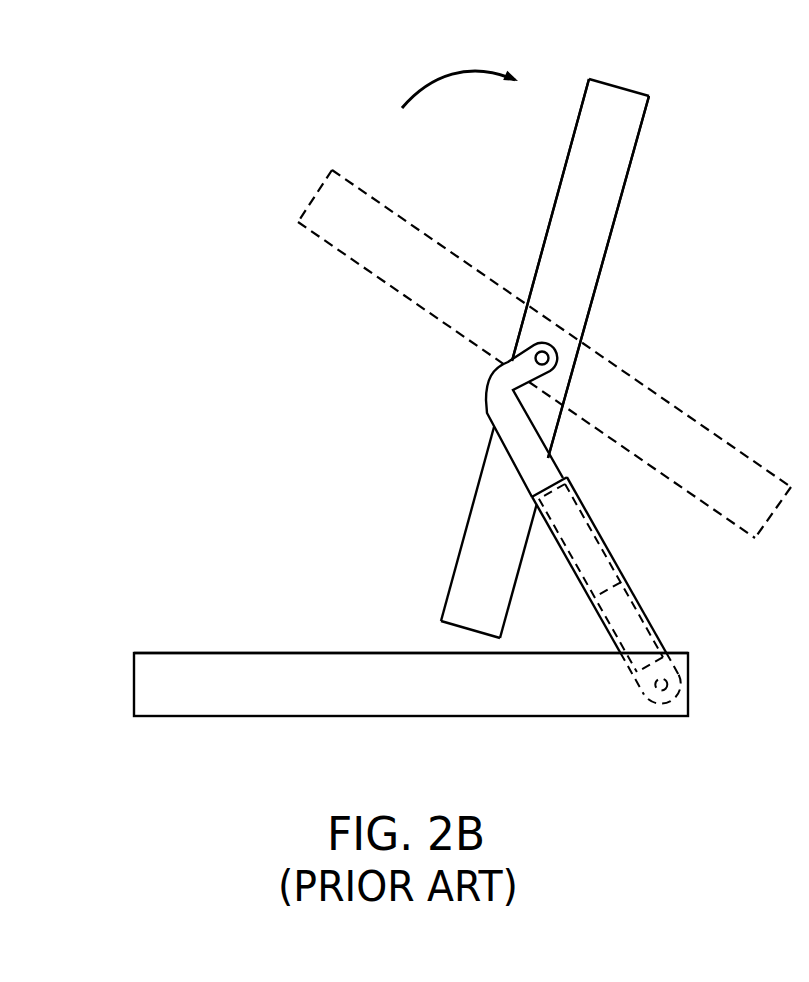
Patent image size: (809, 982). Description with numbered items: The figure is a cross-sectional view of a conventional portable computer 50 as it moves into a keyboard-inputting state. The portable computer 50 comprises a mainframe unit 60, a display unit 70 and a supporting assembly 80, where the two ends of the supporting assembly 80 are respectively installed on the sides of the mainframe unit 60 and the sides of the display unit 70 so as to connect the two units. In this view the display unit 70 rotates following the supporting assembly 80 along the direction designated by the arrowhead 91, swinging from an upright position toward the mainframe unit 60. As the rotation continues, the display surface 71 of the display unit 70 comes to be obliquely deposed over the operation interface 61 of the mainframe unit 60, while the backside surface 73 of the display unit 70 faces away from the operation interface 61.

The portable computer 50 is at (168, 217).
The mainframe unit 60 is at (134, 683).
The operation interface 61 is at (229, 635).
The display unit 70 is at (613, 98).
The display surface 71 is at (548, 166).
The backside surface 73 is at (646, 191).
The supporting assembly 80 is at (486, 386).
The arrowhead 91 is at (445, 73).